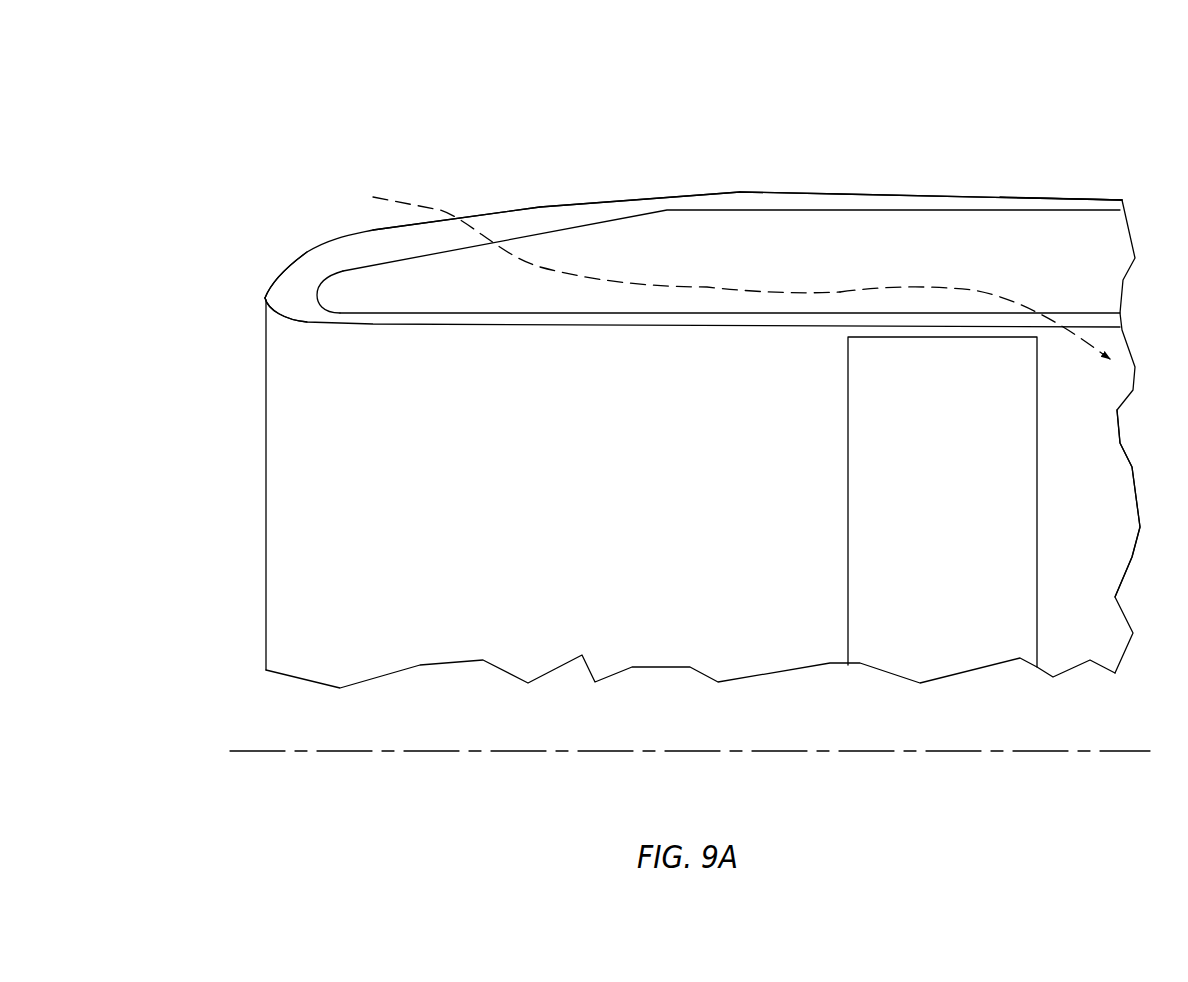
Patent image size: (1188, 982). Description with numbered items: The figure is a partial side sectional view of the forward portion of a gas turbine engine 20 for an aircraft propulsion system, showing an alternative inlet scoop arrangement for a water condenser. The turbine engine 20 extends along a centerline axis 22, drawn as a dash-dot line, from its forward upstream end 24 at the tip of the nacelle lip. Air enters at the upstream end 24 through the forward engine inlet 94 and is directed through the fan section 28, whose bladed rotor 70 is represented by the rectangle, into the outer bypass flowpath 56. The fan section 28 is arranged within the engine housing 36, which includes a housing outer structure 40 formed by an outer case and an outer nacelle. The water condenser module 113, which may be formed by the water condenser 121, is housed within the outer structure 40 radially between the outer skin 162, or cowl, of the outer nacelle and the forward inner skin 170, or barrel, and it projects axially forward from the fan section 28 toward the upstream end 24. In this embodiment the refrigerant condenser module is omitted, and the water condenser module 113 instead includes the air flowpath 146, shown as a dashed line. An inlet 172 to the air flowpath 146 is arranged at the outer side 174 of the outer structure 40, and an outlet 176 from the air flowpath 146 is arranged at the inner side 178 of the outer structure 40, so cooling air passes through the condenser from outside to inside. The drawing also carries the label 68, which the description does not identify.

The gas turbine engine 20 is at (335, 115).
The centerline axis 22 is at (240, 751).
The forward upstream end 24 is at (265, 300).
The fan section 28 is at (800, 507).
The engine housing 36 is at (1136, 163).
The housing outer structure 40 is at (1058, 185).
The outer bypass flowpath 56 is at (1094, 495).
The outer region / freestream 68 is at (843, 115).
The bladed rotor 70 is at (847, 573).
The forward engine inlet 94 is at (275, 420).
The water condenser module 113 is at (892, 262).
The water condenser 121 is at (330, 292).
The air flowpath 146 is at (707, 287).
The outer skin 162 is at (628, 200).
The forward inner skin 170 is at (557, 327).
The inlet 172 is at (422, 223).
The outer side 174 is at (707, 193).
The outlet 176 is at (1060, 327).
The inner side 178 is at (617, 327).